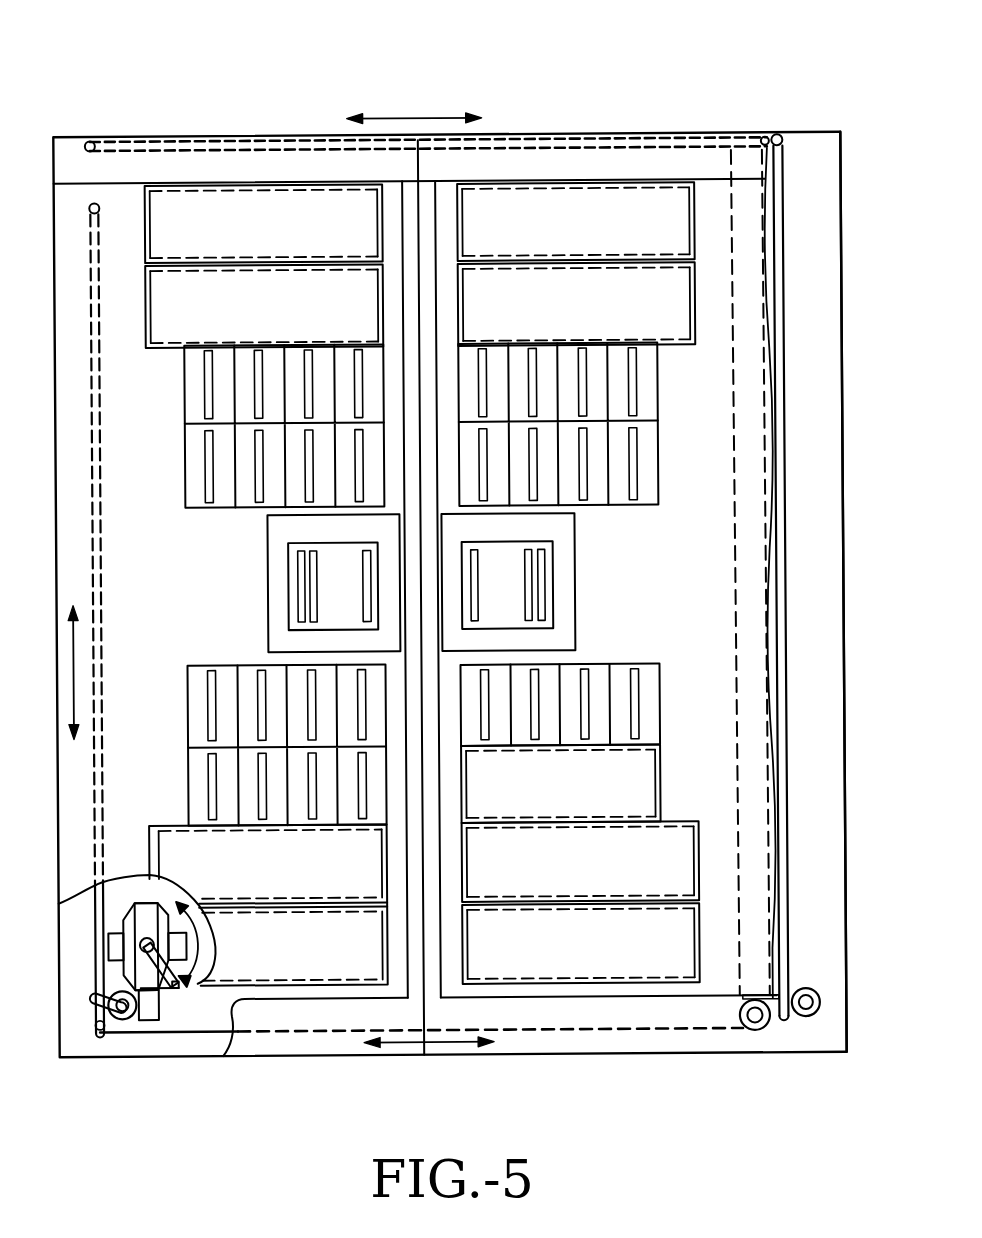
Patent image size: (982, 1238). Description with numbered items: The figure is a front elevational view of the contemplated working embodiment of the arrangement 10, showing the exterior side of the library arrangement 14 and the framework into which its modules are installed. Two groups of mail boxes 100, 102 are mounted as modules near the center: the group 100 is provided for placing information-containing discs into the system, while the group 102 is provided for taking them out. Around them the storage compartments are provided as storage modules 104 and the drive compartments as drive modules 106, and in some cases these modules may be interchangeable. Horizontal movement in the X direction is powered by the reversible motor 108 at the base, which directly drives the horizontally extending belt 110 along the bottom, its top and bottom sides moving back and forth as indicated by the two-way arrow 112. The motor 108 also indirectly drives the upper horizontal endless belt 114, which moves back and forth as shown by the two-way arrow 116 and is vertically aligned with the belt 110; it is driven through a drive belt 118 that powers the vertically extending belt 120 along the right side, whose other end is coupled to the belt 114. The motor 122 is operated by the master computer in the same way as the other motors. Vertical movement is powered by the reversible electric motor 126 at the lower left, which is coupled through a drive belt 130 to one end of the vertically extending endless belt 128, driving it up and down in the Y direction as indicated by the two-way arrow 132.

The arrangement 10 is at (77, 112).
The library arrangement 14 is at (835, 588).
The group of mail boxes 100 is at (260, 582).
The group of mail boxes 102 is at (583, 598).
The storage module 104 is at (705, 219).
The drive module 106 is at (668, 468).
The reversible motor 108 is at (661, 783).
The horizontally extending belt 110 is at (183, 1033).
The two-way arrow 112 is at (411, 1040).
The upper horizontal endless belt 114 is at (598, 140).
The two-way arrow 116 is at (409, 116).
The drive belt 118 is at (784, 1027).
The vertically extending belt 120 is at (788, 850).
The motor 122 is at (806, 990).
The reversible electric motor 126 is at (125, 1020).
The vertically extending endless belt 128 is at (107, 829).
The drive belt 130 is at (94, 1010).
The two-way arrow 132 is at (73, 660).